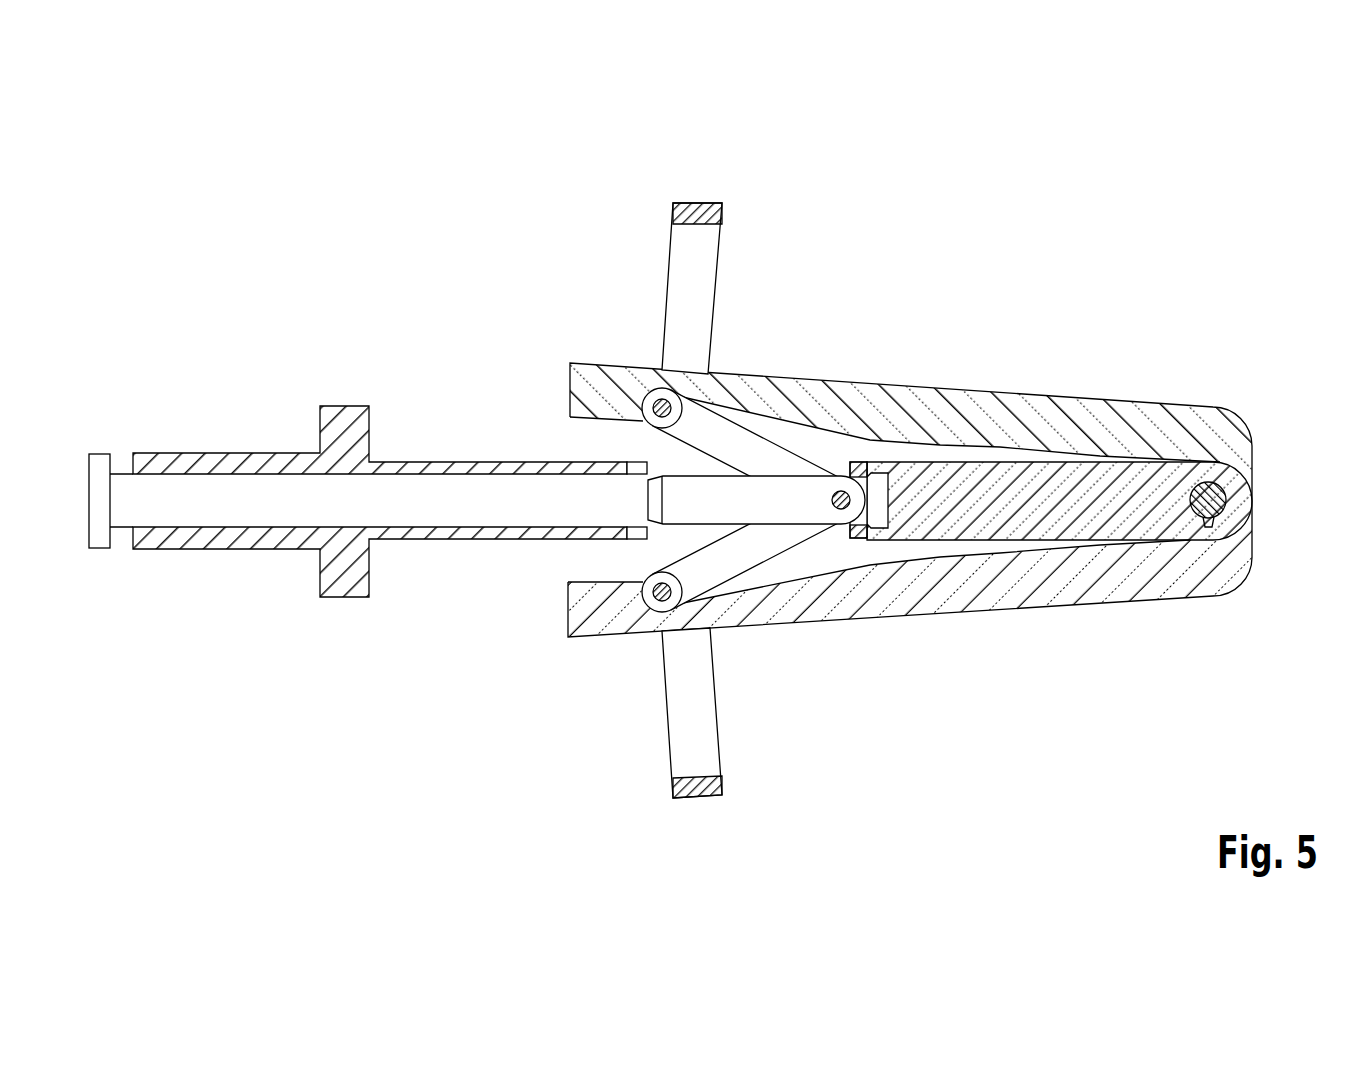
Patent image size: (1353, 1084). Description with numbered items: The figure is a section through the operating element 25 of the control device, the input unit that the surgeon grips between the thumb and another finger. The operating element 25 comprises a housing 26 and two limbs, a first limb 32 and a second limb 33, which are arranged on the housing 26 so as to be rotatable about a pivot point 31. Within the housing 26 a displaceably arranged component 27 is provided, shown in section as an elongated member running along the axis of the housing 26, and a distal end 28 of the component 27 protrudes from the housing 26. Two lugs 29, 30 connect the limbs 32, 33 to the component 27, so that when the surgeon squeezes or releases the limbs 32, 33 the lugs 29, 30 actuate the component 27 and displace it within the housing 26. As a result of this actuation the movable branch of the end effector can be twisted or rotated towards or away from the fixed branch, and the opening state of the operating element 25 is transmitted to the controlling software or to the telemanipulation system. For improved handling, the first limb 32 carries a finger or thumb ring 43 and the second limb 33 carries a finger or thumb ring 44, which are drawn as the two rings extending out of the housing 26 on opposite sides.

The operating element 25 is at (490, 208).
The housing 26 is at (1048, 497).
The displaceably arranged component 27 is at (225, 487).
The distal end 28 is at (98, 455).
The lug 29 is at (721, 440).
The lug 30 is at (722, 565).
The pivot point 31 is at (1212, 498).
The first limb 32 is at (930, 400).
The second limb 33 is at (923, 608).
The finger or thumb ring 43 is at (698, 792).
The finger or thumb ring 44 is at (697, 207).